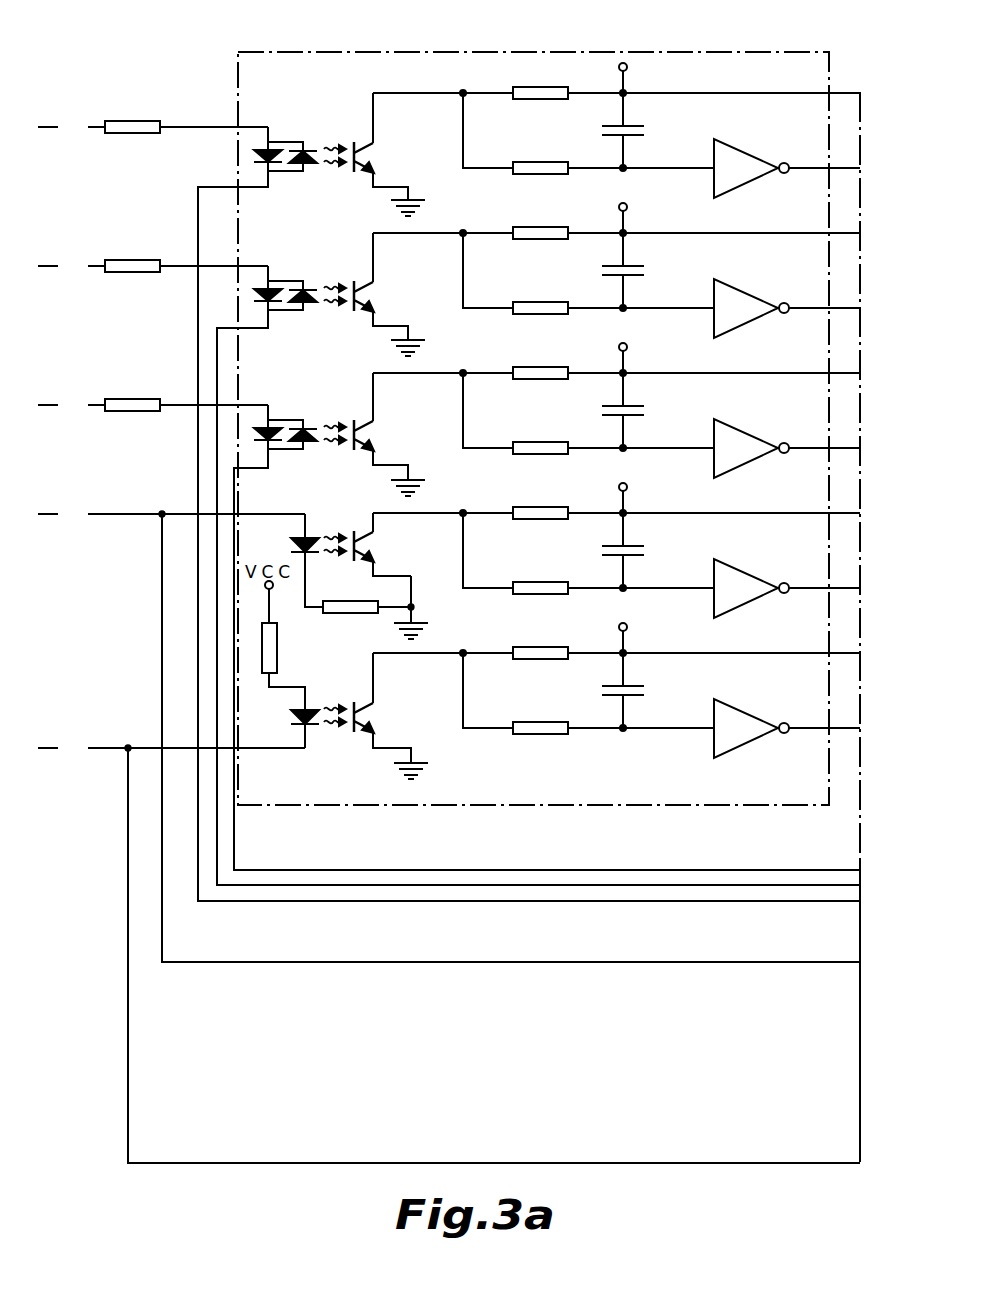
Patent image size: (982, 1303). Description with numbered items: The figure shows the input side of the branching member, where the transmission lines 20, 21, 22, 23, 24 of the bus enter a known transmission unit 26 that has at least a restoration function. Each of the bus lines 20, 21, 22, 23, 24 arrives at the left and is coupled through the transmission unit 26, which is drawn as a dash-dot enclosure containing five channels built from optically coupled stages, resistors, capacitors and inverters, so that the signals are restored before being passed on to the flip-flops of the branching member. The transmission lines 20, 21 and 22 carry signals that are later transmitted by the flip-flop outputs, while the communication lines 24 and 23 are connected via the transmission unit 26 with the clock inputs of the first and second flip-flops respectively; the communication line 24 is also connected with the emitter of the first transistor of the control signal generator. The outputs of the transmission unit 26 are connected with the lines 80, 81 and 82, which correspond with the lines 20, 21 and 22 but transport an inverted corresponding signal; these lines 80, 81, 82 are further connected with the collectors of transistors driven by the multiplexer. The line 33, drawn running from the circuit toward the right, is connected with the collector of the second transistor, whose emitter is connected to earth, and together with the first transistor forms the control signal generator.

The transmission line 20 is at (153, 128).
The transmission line 21 is at (153, 267).
The transmission line 22 is at (153, 406).
The communication line 23 is at (171, 515).
The communication line 24 is at (171, 749).
The transmission unit 26 is at (661, 49).
The line 33 is at (320, 963).
The line 80 is at (463, 67).
The line 81 is at (463, 207).
The line 82 is at (463, 350).